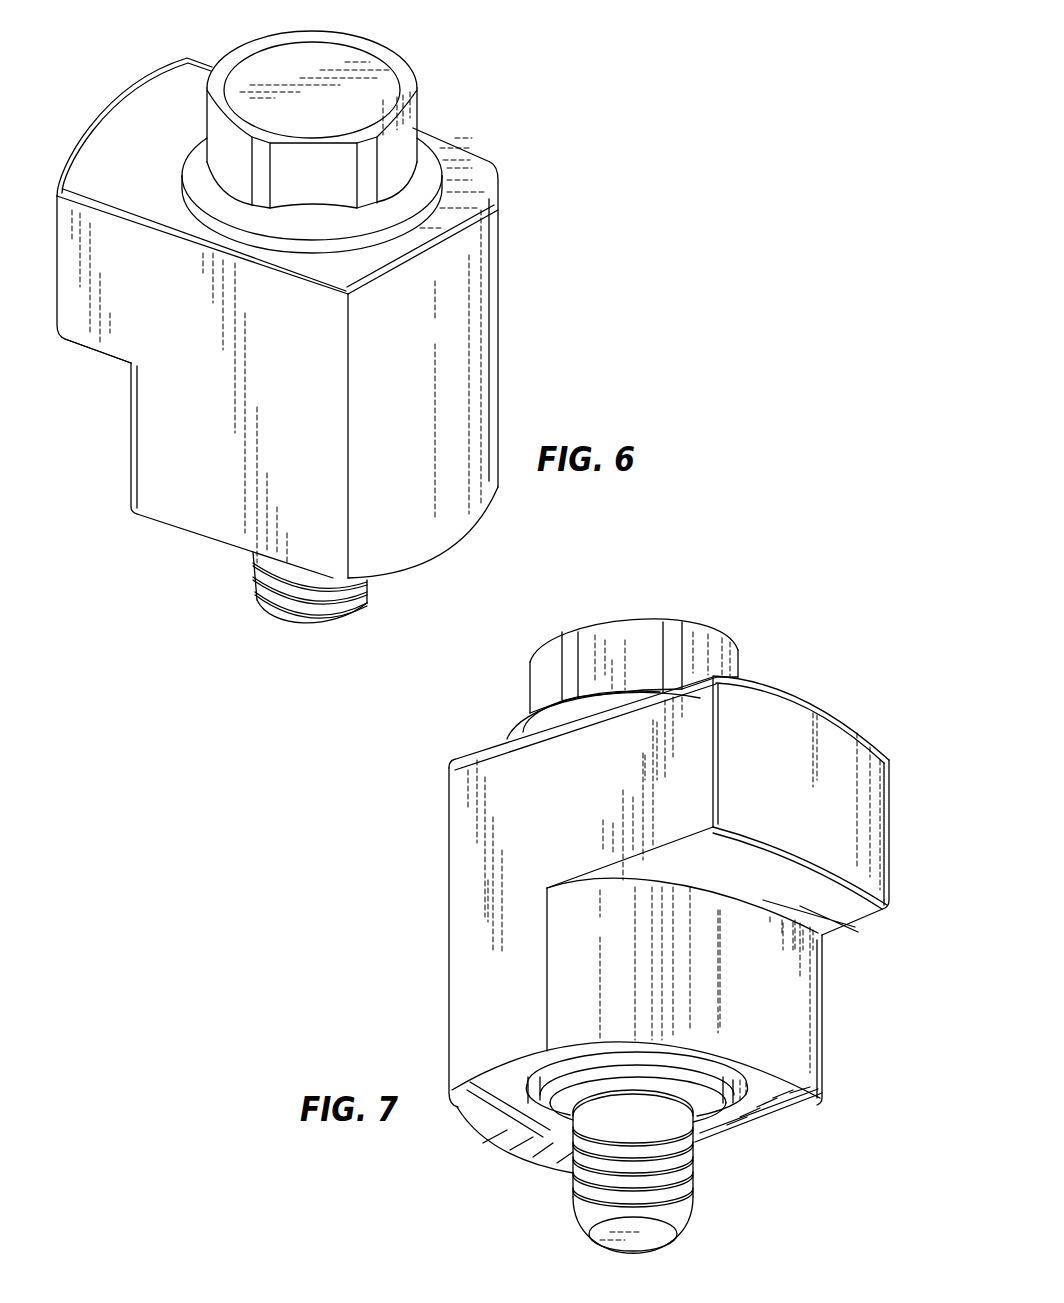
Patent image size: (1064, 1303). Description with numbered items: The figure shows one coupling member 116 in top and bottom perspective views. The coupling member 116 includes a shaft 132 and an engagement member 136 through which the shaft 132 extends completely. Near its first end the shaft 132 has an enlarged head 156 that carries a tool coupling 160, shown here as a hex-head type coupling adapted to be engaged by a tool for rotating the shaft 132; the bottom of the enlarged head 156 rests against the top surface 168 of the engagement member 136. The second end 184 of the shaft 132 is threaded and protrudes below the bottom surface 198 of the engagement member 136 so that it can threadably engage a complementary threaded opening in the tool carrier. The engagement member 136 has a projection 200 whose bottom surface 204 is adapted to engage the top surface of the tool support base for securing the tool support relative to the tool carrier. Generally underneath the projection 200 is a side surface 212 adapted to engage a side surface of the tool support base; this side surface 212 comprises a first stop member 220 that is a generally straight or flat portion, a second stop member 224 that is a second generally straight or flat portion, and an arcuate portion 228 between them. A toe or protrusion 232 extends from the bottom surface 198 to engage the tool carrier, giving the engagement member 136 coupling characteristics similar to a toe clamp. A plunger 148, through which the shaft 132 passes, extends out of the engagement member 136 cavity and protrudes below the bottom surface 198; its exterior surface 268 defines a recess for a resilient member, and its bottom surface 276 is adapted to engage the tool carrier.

In FIG. 6, the coupling member 116 is at (570, 133).
In FIG. 7, the coupling member 116 is at (395, 812).
In FIG. 6, the shaft 132 is at (246, 578).
In FIG. 7, the shaft 132 is at (722, 620).
In FIG. 6, the engagement member 136 is at (492, 302).
In FIG. 7, the engagement member 136 is at (878, 768).
In FIG. 7, the plunger 148 is at (745, 1090).
In FIG. 6, the enlarged head 156 is at (424, 128).
In FIG. 7, the enlarged head 156 is at (574, 620).
In FIG. 6, the tool coupling 160 is at (278, 62).
In FIG. 7, the tool coupling 160 is at (535, 686).
In FIG. 6, the top surface 168 is at (471, 168).
In FIG. 6, the second end 184 is at (294, 600).
In FIG. 7, the second end 184 is at (690, 1193).
In FIG. 6, the bottom surface 198 is at (172, 523).
In FIG. 7, the bottom surface 198 is at (480, 1083).
In FIG. 6, the projection 200 is at (50, 223).
In FIG. 7, the projection 200 is at (860, 932).
In FIG. 6, the bottom surface 204 is at (91, 352).
In FIG. 7, the bottom surface 204 is at (808, 880).
In FIG. 6, the side surface 212 is at (126, 437).
In FIG. 7, the side surface 212 is at (798, 995).
In FIG. 7, the first stop member 220 is at (806, 1032).
In FIG. 7, the second stop member 224 is at (478, 1006).
In FIG. 7, the arcuate portion 228 is at (658, 963).
In FIG. 6, the protrusion 232 is at (333, 598).
In FIG. 7, the protrusion 232 is at (500, 1140).
In FIG. 7, the exterior surface 268 is at (468, 1085).
In FIG. 7, the bottom surface 276 is at (713, 1118).